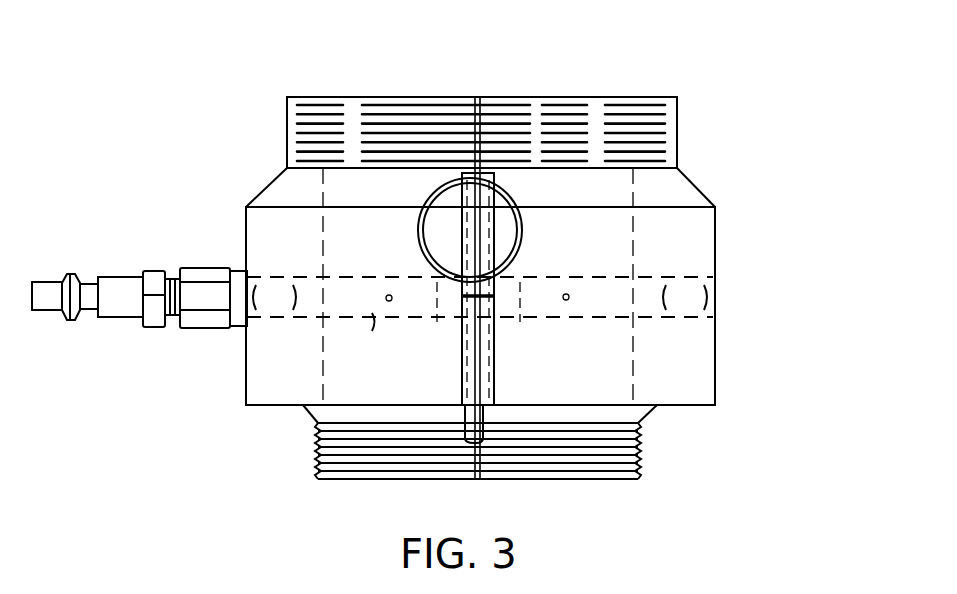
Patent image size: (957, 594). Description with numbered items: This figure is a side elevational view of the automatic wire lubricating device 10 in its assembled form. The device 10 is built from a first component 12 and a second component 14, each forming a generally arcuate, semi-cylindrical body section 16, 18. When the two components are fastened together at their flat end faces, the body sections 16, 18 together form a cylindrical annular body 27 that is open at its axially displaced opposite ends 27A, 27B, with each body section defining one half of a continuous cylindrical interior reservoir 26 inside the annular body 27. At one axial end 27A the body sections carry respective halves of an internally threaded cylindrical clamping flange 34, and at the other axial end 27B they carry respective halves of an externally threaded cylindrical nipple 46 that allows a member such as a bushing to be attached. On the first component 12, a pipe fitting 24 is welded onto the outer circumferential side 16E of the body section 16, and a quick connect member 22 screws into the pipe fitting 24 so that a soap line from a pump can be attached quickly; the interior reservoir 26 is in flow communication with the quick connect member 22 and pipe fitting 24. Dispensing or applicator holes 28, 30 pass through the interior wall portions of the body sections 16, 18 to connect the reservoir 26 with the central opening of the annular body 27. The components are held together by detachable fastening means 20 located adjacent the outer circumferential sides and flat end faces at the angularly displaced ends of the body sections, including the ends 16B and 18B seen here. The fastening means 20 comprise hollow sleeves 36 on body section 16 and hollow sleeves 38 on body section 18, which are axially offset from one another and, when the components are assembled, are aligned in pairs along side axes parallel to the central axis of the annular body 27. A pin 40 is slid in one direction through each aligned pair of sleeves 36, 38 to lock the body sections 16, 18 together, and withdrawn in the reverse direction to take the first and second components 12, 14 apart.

The automatic wire lubricating device 10 is at (598, 90).
The first component 12 is at (243, 391).
The second component 14 is at (717, 229).
The body section 16 is at (258, 230).
The angularly displaced end 16B is at (437, 178).
The outer circumferential side 16E is at (243, 348).
The body section 18 is at (705, 357).
The angularly displaced end 18B is at (500, 178).
The detachable fastening means 20 is at (421, 190).
The quick connect member 22 is at (120, 278).
The pipe fitting 24 is at (202, 268).
The continuous cylindrical interior reservoir 26 is at (686, 267).
The annular body 27 is at (692, 173).
The axially displaced end 27A is at (648, 97).
The axially displaced end 27B is at (623, 478).
The dispensing or applicator hole 28 is at (391, 301).
The dispensing or applicator hole 30 is at (568, 300).
The internally threaded cylindrical clamping flange 34 is at (287, 125).
The sleeve 36 is at (498, 236).
The sleeve 38 is at (497, 375).
The pin 40 is at (505, 184).
The externally threaded cylindrical nipple 46 is at (318, 447).